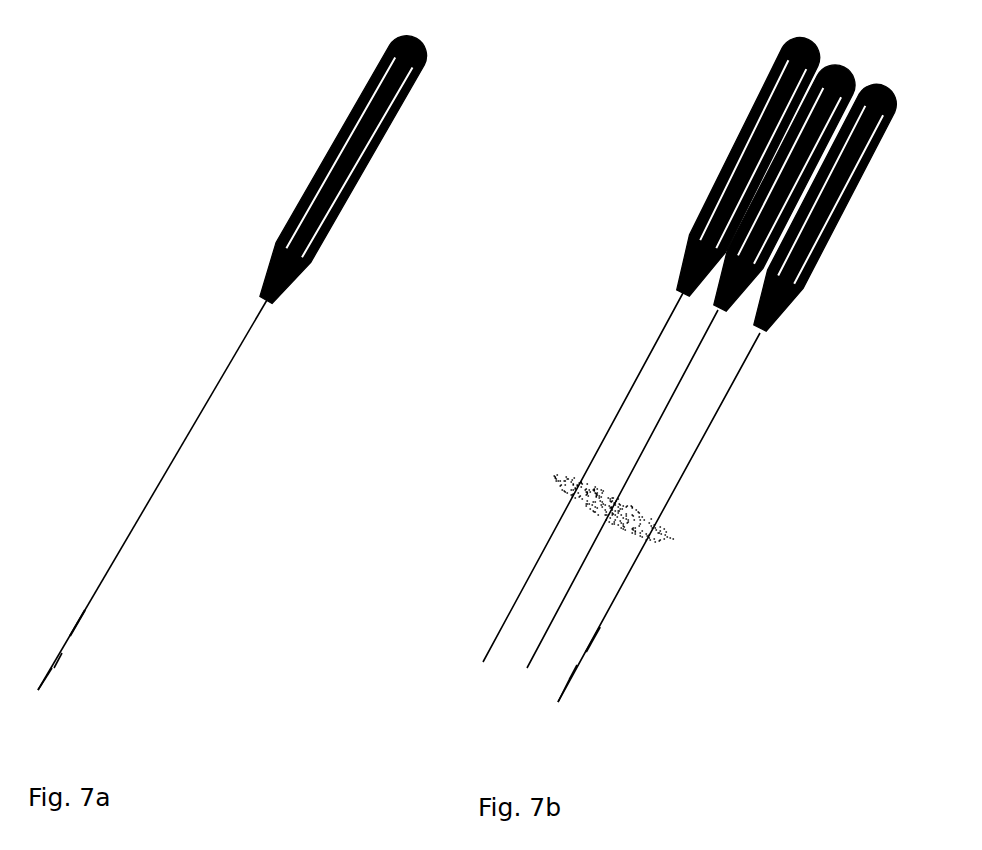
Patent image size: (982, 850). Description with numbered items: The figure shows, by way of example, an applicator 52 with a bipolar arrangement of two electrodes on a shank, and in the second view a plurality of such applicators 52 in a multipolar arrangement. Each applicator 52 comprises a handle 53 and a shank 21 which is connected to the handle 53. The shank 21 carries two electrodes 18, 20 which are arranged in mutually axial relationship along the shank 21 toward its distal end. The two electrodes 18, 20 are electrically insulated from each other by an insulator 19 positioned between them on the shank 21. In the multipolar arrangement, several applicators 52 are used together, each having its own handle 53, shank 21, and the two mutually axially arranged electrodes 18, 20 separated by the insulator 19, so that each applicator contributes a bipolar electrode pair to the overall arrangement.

In FIG. 7A, the applicator 52 is at (284, 363).
In FIG. 7B, the applicator 52 is at (689, 374).
In FIG. 7A, the handle 53 is at (377, 153).
In FIG. 7B, the handle 53 is at (793, 295).
In FIG. 7A, the shank 21 is at (169, 502).
In FIG. 7B, the shank 21 is at (632, 505).
In FIG. 7A, the electrode 20 is at (75, 628).
In FIG. 7B, the electrode 20 is at (592, 642).
In FIG. 7A, the insulator 19 is at (58, 660).
In FIG. 7B, the insulator 19 is at (573, 672).
In FIG. 7A, the electrode 18 is at (50, 672).
In FIG. 7B, the electrode 18 is at (565, 685).